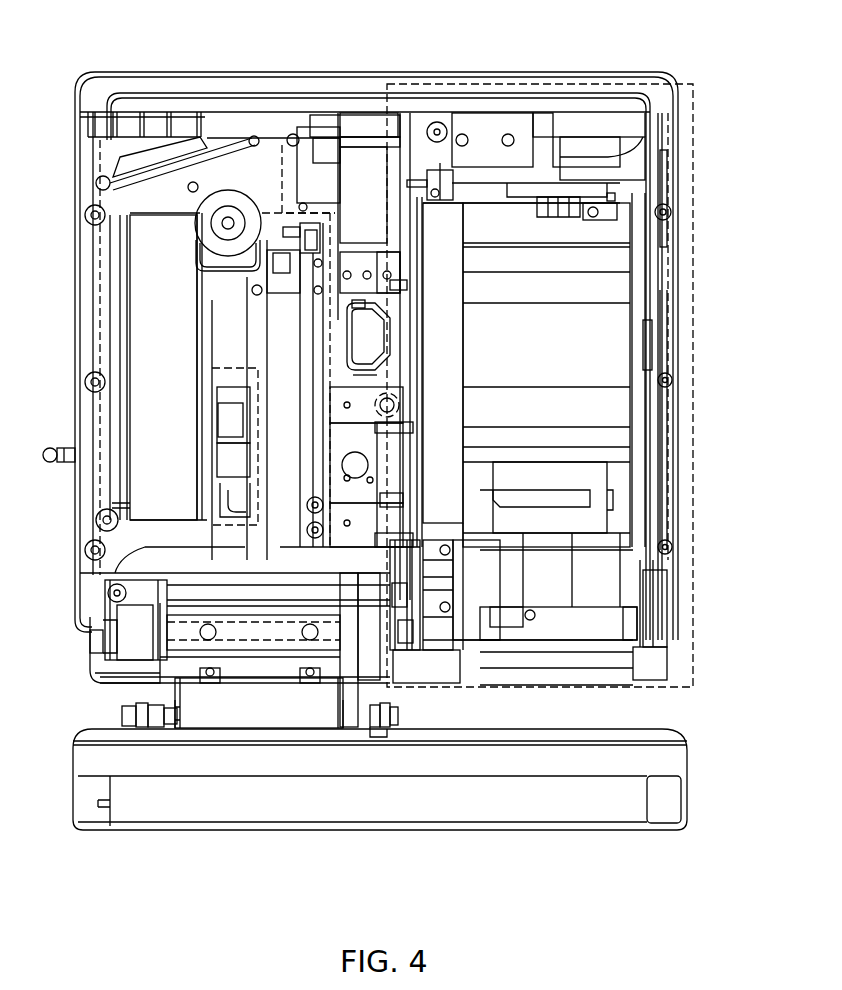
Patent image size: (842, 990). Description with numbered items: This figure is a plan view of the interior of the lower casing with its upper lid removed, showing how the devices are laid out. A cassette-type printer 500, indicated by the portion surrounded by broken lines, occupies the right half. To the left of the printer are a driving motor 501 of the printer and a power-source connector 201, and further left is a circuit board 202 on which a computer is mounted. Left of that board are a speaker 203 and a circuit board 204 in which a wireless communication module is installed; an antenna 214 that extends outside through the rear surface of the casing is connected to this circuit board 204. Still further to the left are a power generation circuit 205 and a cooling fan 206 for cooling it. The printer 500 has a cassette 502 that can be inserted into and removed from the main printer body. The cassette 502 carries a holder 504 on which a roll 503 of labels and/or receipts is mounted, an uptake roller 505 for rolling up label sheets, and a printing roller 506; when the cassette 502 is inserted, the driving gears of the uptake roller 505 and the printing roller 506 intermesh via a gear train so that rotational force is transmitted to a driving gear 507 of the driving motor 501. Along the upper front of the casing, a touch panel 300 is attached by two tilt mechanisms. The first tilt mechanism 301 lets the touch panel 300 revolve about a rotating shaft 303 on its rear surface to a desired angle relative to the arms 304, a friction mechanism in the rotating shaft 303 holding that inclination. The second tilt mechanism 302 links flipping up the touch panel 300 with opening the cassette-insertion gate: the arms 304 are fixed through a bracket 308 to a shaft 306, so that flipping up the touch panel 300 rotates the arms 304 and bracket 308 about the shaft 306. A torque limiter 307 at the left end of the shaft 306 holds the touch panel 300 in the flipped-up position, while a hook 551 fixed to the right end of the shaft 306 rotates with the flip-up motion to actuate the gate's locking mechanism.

The power-source connector 201 is at (362, 328).
The circuit board 202 is at (281, 145).
The speaker 203 is at (228, 195).
The circuit board 204 is at (220, 367).
The power generation circuit 205 is at (147, 443).
The cooling fan 206 is at (122, 162).
The antenna 214 is at (46, 461).
The touch panel 300 is at (668, 797).
The first tilt mechanism 301 is at (108, 716).
The second tilt mechanism 302 is at (92, 659).
The rotating shaft 303 is at (340, 713).
The arms 304 is at (340, 693).
The shaft 306 is at (403, 632).
The torque limiter 307 is at (130, 620).
The bracket 308 is at (185, 666).
The cassette-type printer 500 is at (695, 194).
The driving motor 501 is at (362, 122).
The cassette 502 is at (625, 195).
The roll 503 is at (615, 288).
The holder 504 is at (642, 340).
The uptake roller 505 is at (593, 482).
The printing roller 506 is at (625, 628).
The driving gear 507 is at (453, 133).
The hook 551 is at (412, 630).